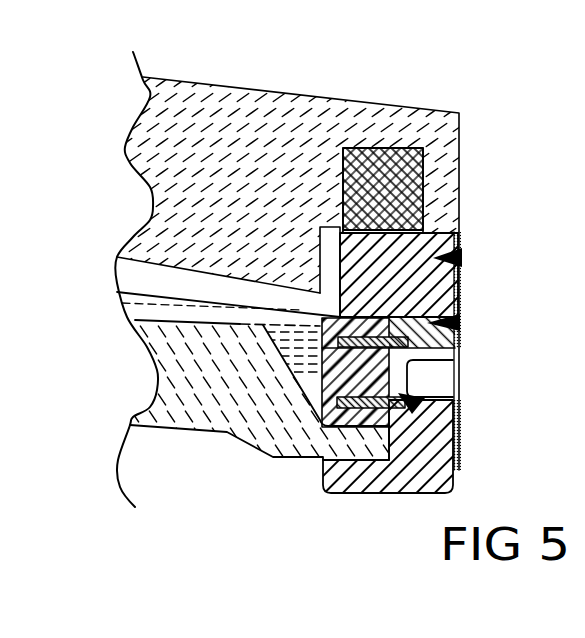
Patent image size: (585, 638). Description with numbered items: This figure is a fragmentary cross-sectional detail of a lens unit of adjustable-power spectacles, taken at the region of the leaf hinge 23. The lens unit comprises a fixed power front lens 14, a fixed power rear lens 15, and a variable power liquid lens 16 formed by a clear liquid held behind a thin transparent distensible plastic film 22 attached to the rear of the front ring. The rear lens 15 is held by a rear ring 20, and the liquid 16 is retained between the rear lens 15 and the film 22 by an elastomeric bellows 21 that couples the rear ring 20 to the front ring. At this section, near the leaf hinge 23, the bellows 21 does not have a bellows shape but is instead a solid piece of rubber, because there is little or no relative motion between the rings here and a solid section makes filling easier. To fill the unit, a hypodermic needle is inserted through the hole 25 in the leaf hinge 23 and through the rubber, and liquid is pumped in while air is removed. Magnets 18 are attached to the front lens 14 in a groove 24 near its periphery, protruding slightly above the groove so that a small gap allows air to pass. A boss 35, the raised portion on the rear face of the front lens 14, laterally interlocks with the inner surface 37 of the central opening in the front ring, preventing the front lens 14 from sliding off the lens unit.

The front lens 14 is at (267, 90).
The rear lens 15 is at (150, 371).
The liquid lens 16 is at (128, 308).
The magnets 18 is at (373, 147).
The rear ring 20 is at (357, 493).
The elastomeric bellows 21 is at (322, 377).
The distensible plastic film 22 is at (147, 288).
The leaf hinge 23 is at (467, 271).
The groove 24 is at (420, 193).
The hole 25 is at (462, 367).
The boss 35 is at (320, 262).
The inner surface 37 is at (340, 272).